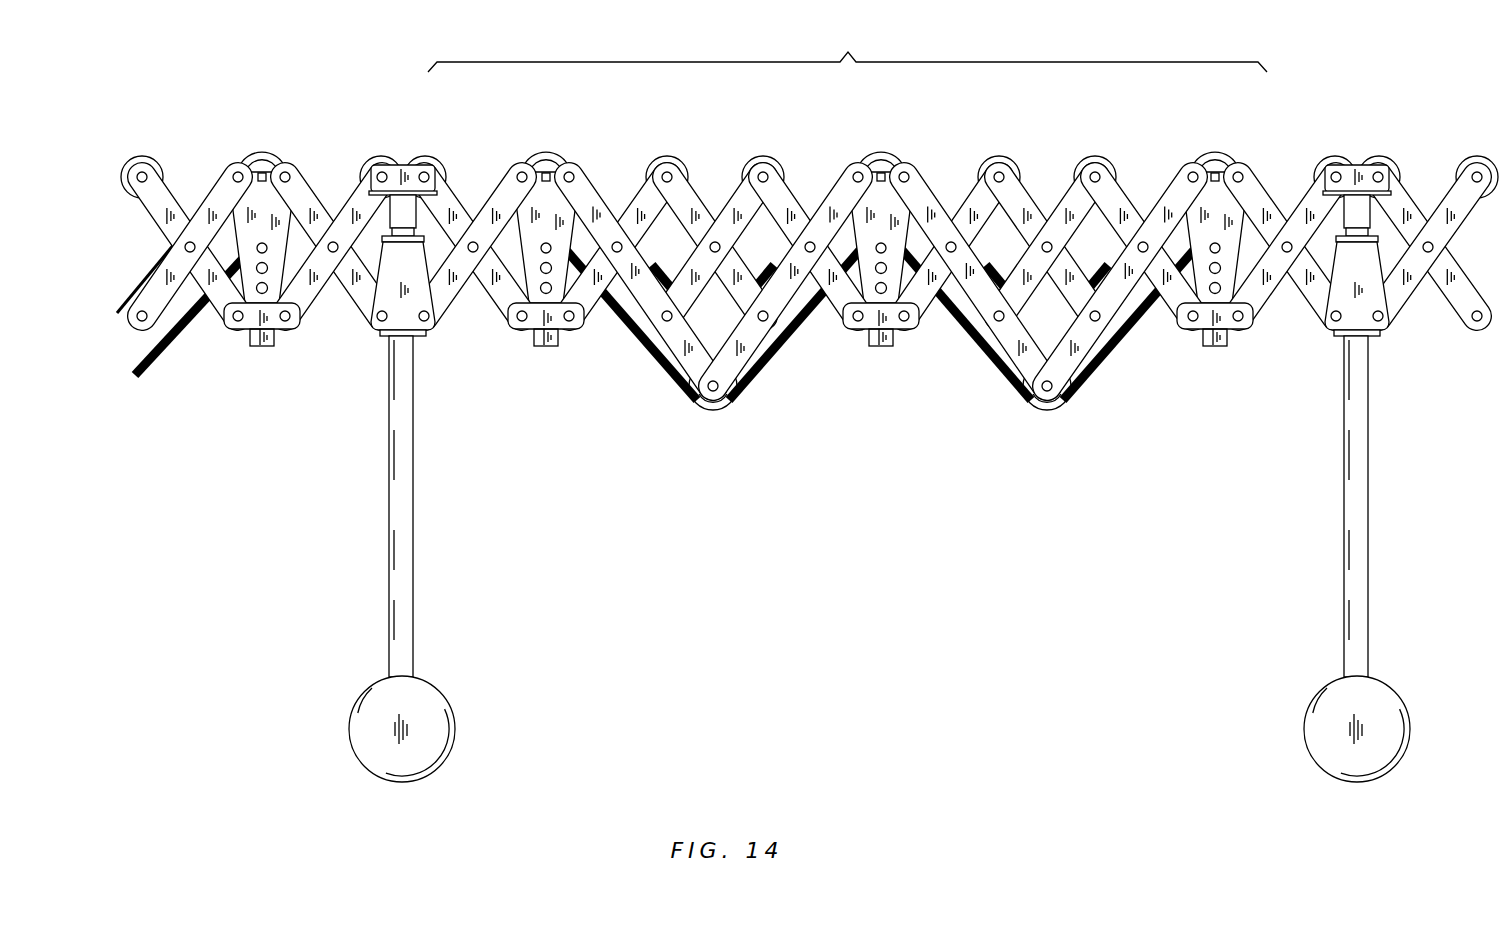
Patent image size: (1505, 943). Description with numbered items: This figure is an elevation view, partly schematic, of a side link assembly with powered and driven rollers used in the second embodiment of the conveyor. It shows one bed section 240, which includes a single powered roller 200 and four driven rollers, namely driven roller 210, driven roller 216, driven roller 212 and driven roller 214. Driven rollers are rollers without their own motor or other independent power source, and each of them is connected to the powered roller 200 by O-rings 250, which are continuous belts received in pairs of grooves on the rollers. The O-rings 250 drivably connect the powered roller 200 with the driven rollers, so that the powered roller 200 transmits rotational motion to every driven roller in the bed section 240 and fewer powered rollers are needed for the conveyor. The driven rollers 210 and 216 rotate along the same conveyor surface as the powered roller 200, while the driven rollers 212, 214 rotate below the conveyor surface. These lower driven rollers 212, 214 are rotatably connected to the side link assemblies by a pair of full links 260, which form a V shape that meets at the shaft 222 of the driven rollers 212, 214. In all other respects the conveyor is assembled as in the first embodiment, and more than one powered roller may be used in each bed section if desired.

The bed section 240 is at (847, 46).
The powered roller 200 is at (883, 157).
The driven roller 210 is at (552, 157).
The driven roller 216 is at (1220, 157).
The driven roller 212 is at (713, 405).
The driven roller 214 is at (1047, 407).
The shaft 222 is at (718, 390).
The O-rings 250 is at (642, 345).
The full links 260 is at (683, 350).